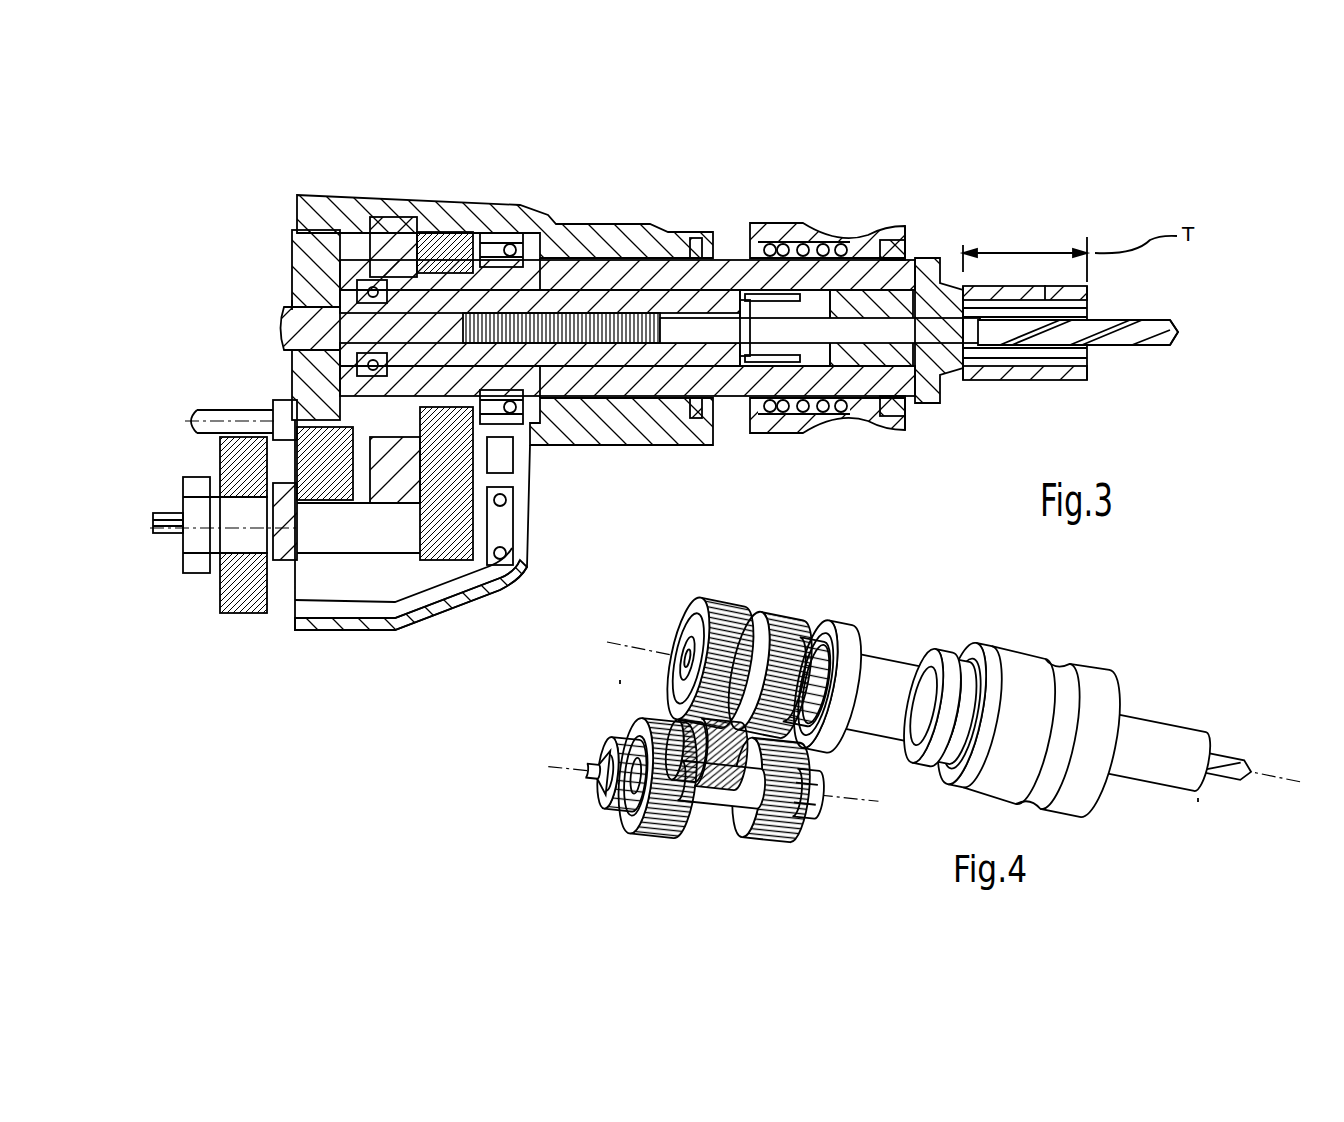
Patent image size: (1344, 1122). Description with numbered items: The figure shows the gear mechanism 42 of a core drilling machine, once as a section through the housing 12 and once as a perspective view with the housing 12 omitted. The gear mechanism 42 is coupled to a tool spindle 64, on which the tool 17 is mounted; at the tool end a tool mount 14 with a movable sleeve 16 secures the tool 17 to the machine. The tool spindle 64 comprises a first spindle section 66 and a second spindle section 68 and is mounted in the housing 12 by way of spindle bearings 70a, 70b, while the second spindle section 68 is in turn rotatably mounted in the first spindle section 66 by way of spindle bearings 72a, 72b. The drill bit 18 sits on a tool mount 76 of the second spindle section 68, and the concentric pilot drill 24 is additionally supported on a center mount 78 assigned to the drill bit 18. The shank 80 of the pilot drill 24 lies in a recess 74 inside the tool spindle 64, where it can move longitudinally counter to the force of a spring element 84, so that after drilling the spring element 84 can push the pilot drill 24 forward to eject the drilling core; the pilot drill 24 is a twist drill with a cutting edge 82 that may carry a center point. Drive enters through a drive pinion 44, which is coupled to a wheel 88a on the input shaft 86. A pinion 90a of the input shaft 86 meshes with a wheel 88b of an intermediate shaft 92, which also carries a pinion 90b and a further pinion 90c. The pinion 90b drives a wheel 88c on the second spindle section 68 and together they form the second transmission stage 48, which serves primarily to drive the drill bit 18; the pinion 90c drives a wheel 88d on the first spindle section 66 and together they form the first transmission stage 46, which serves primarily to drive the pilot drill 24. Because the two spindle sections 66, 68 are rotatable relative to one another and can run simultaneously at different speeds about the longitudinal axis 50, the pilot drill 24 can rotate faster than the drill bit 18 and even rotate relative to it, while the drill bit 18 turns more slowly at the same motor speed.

In FIG. 3, the housing 12 is at (577, 245).
In FIG. 3, the tool mount 14 is at (777, 218).
In FIG. 3, the sleeve 16 is at (892, 232).
In FIG. 4, the sleeve 16 is at (1097, 688).
In FIG. 3, the tool 17 is at (1035, 212).
In FIG. 4, the tool 17 is at (1198, 800).
In FIG. 3, the drill bit 18 is at (1048, 272).
In FIG. 4, the drill bit 18 is at (1185, 722).
In FIG. 3, the pilot drill 24 is at (1180, 320).
In FIG. 4, the pilot drill 24 is at (1233, 758).
In FIG. 3, the gear mechanism 42 is at (275, 390).
In FIG. 4, the gear mechanism 42 is at (618, 683).
In FIG. 3, the drive pinion 44 is at (185, 415).
In FIG. 4, the first transmission stage 46 is at (715, 592).
In FIG. 4, the second transmission stage 48 is at (772, 592).
In FIG. 4, the longitudinal axis 50 is at (1297, 787).
In FIG. 3, the tool spindle 64 is at (550, 258).
In FIG. 4, the tool spindle 64 is at (885, 645).
In FIG. 3, the first spindle section 66 is at (298, 268).
In FIG. 3, the second spindle section 68 is at (605, 305).
In FIG. 3, the spindle bearing 70a is at (510, 236).
In FIG. 4, the spindle bearing 70a is at (841, 628).
In FIG. 3, the spindle bearing 70b is at (712, 255).
In FIG. 4, the spindle bearing 70b is at (948, 665).
In FIG. 3, the spindle bearing 72a is at (352, 272).
In FIG. 3, the spindle bearing 72b is at (745, 300).
In FIG. 3, the recess 74 is at (725, 322).
In FIG. 3, the tool mount 76 is at (945, 272).
In FIG. 3, the center mount 78 is at (948, 375).
In FIG. 3, the shank 80 is at (737, 362).
In FIG. 3, the cutting edge 82 is at (1172, 340).
In FIG. 3, the spring element 84 is at (625, 348).
In FIG. 3, the input shaft 86 is at (170, 513).
In FIG. 4, the input shaft 86 is at (590, 790).
In FIG. 4, the wheel 88a is at (650, 834).
In FIG. 4, the wheel 88b is at (830, 790).
In FIG. 3, the wheel 88c is at (382, 262).
In FIG. 4, the wheel 88c is at (748, 618).
In FIG. 3, the wheel 88d is at (352, 278).
In FIG. 4, the wheel 88d is at (697, 618).
In FIG. 4, the pinion 90a is at (763, 817).
In FIG. 4, the pinion 90b is at (717, 783).
In FIG. 4, the pinion 90c is at (668, 715).
In FIG. 4, the intermediate shaft 92 is at (818, 800).